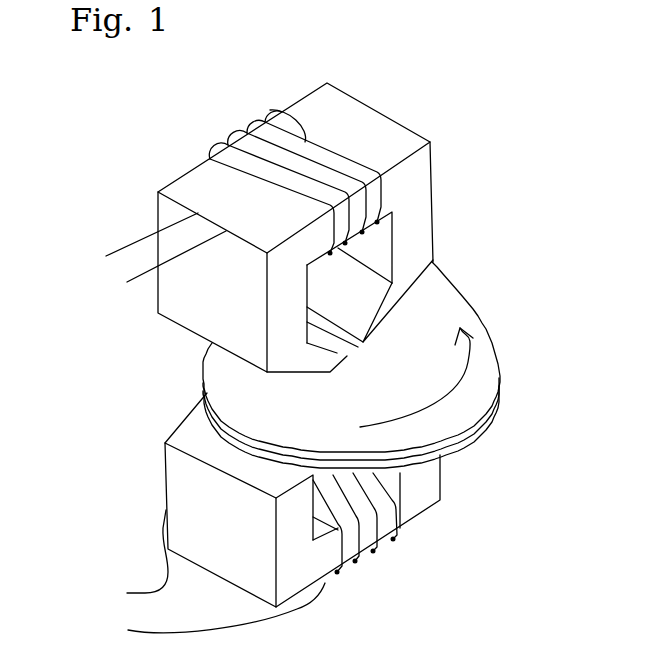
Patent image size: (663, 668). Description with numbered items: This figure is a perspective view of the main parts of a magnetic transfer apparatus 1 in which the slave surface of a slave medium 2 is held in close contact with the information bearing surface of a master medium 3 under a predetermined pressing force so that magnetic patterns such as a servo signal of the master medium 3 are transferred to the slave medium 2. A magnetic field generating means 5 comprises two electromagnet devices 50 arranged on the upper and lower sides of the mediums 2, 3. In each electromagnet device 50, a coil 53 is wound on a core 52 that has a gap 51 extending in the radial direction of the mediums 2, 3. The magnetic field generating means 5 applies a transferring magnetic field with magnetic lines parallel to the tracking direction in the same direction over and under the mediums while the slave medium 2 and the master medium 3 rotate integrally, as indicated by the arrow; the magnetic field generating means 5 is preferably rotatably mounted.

The magnetic recording apparatus 1 is at (59, 134).
The slave medium 2 is at (487, 380).
The master medium 3 is at (475, 435).
The magnetic field generating means 5 is at (185, 143).
The electromagnet device 50 is at (382, 122).
The gap 51 is at (340, 354).
The core 52 is at (397, 307).
The coil 53 is at (263, 112).